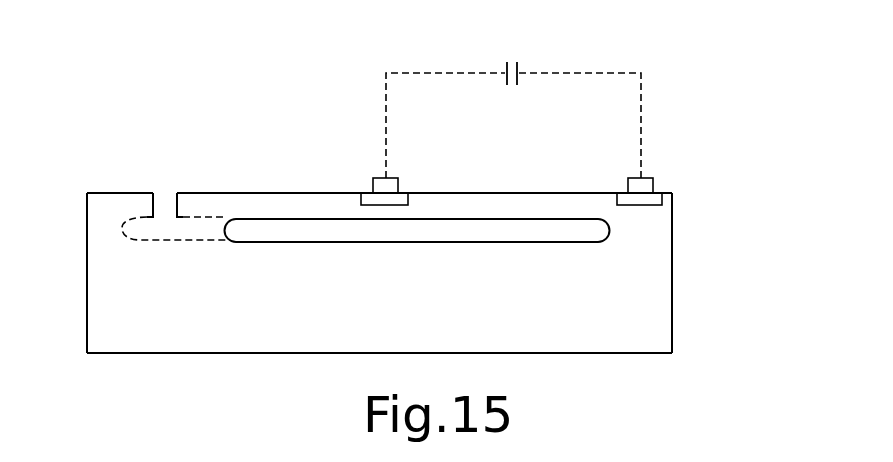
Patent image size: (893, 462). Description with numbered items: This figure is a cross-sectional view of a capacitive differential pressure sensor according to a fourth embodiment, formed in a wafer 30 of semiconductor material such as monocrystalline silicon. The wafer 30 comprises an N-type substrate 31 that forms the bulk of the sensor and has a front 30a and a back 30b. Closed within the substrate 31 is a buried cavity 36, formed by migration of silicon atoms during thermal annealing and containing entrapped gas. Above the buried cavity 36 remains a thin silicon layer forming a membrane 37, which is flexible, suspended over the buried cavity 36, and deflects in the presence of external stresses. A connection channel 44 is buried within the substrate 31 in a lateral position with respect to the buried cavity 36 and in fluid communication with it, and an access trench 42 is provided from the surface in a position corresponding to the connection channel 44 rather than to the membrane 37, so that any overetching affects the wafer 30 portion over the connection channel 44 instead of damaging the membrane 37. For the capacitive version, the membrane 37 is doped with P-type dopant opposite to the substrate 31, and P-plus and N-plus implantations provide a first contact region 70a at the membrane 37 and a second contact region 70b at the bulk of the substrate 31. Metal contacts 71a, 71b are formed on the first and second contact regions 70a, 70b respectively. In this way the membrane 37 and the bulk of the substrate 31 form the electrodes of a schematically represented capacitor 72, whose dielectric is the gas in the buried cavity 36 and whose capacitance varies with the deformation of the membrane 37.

The wafer 30 is at (438, 272).
The front 30a is at (116, 182).
The back 30b is at (106, 364).
The substrate 31 is at (658, 323).
The buried cavity 36 is at (595, 232).
The membrane 37 is at (297, 203).
The access trench 42 is at (161, 185).
The connection channel 44 is at (197, 232).
The first contact region 70a is at (398, 198).
The second contact region 70b is at (658, 197).
The first metal contact 71a is at (390, 178).
The second metal contact 71b is at (647, 178).
The capacitor 72 is at (522, 62).